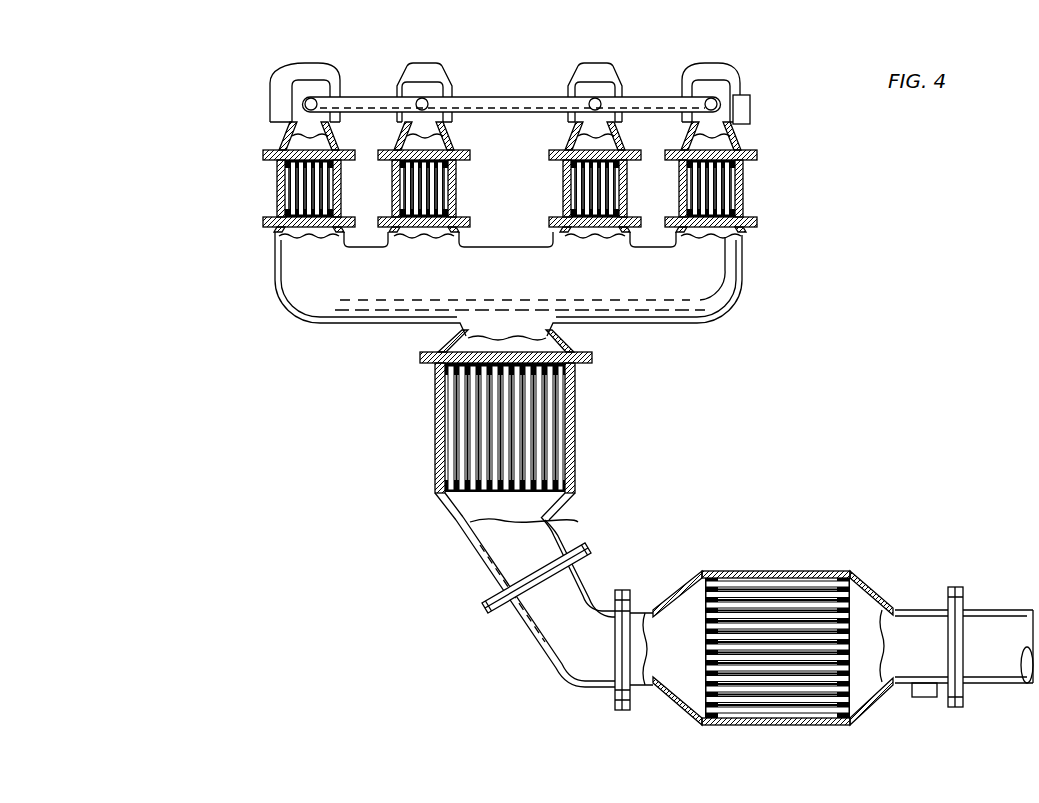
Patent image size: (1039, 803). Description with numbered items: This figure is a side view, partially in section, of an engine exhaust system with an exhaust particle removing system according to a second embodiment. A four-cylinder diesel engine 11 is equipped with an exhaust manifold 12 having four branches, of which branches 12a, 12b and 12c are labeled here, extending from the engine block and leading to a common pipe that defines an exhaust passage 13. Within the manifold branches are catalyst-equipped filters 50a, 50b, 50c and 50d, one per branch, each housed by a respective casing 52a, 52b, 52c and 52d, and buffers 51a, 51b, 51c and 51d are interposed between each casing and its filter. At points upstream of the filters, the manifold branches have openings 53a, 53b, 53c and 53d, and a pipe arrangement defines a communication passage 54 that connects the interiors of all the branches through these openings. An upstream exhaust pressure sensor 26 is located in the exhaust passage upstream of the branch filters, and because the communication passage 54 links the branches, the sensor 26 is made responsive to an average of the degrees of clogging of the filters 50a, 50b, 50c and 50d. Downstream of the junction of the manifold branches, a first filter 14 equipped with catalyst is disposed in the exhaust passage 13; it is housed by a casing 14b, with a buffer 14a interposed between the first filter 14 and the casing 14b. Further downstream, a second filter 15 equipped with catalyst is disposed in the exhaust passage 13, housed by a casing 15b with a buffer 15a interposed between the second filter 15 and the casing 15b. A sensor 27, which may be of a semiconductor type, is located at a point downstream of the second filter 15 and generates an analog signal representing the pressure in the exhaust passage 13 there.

The diesel engine 11 is at (250, 86).
The exhaust manifold 12 is at (747, 283).
The manifold branch 12a is at (335, 147).
The manifold branch 12b is at (618, 147).
The manifold branch 12c is at (452, 147).
The exhaust passage 13 is at (585, 590).
The first filter 14 is at (545, 392).
The buffer 14a is at (574, 420).
The casing 14b is at (570, 460).
The second filter 15 is at (733, 598).
The buffer 15a is at (773, 575).
The casing 15b is at (827, 573).
The upstream exhaust pressure sensor 26 is at (752, 106).
The sensor 27 is at (918, 700).
The catalyst-equipped filter 50a is at (745, 185).
The catalyst-equipped filter 50b is at (574, 171).
The catalyst-equipped filter 50c is at (453, 179).
The catalyst-equipped filter 50d is at (275, 185).
The buffer 51a is at (749, 188).
The buffer 51b is at (568, 191).
The buffer 51c is at (457, 188).
The buffer 51d is at (271, 188).
The casing 52a is at (738, 191).
The casing 52b is at (575, 198).
The casing 52c is at (446, 191).
The casing 52d is at (282, 191).
The opening 53a is at (712, 98).
The opening 53b is at (595, 98).
The opening 53c is at (422, 98).
The opening 53d is at (311, 98).
The communication passage 54 is at (506, 97).